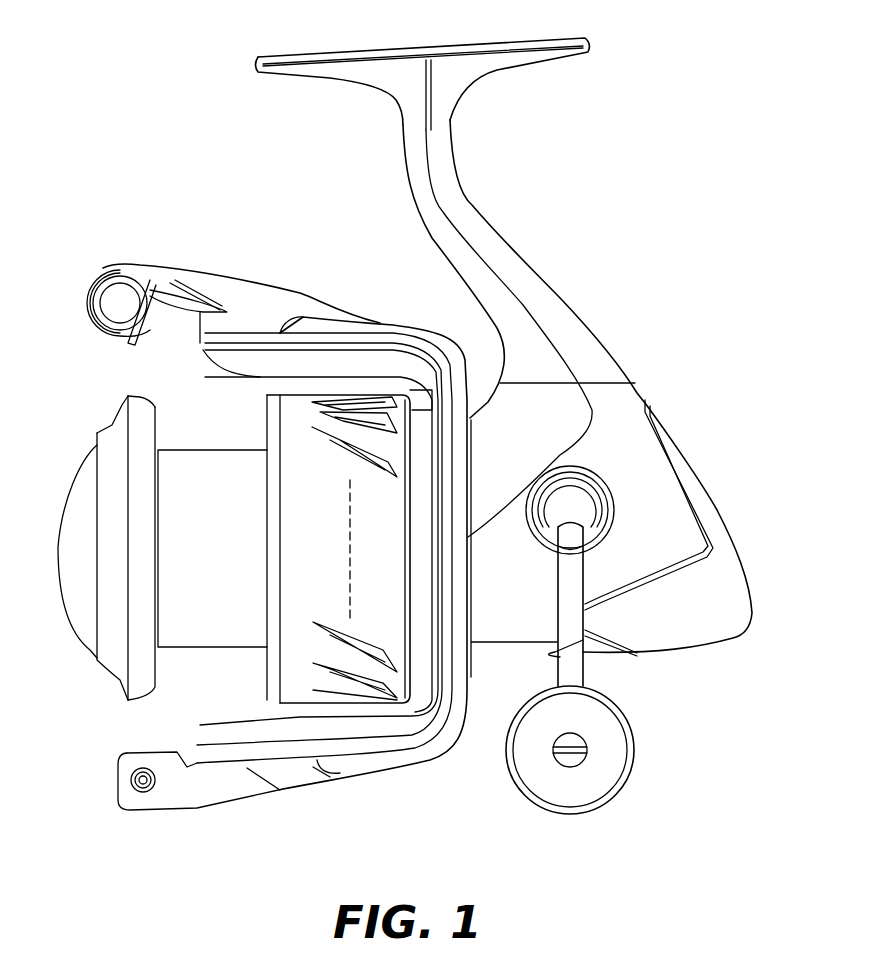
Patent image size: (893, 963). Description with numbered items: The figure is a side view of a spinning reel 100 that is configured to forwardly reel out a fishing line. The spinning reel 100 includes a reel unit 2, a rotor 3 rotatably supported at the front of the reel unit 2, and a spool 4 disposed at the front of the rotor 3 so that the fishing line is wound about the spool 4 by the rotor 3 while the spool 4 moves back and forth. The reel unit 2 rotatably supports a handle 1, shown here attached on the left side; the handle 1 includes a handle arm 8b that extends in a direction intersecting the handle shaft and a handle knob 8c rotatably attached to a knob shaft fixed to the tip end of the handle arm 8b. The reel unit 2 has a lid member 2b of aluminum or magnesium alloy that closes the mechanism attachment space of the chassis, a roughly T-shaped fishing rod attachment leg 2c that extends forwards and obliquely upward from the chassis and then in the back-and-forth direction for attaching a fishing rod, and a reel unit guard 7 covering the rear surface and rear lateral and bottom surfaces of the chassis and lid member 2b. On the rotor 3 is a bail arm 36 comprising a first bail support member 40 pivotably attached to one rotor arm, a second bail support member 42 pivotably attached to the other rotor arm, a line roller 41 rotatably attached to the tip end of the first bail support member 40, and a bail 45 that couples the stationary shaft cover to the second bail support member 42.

The spinning reel 100 is at (220, 150).
The handle 1 is at (593, 678).
The reel unit 2 is at (563, 280).
The lid member 2b is at (562, 410).
The fishing rod attachment leg 2c is at (493, 248).
The rotor 3 is at (338, 318).
The spool 4 is at (203, 440).
The reel unit guard 7 is at (685, 440).
The handle arm 8b is at (570, 657).
The handle knob 8c is at (550, 783).
The bail arm 36 is at (93, 350).
The first bail support member 40 is at (223, 270).
The line roller 41 is at (107, 266).
The second bail support member 42 is at (198, 795).
The bail 45 is at (130, 337).